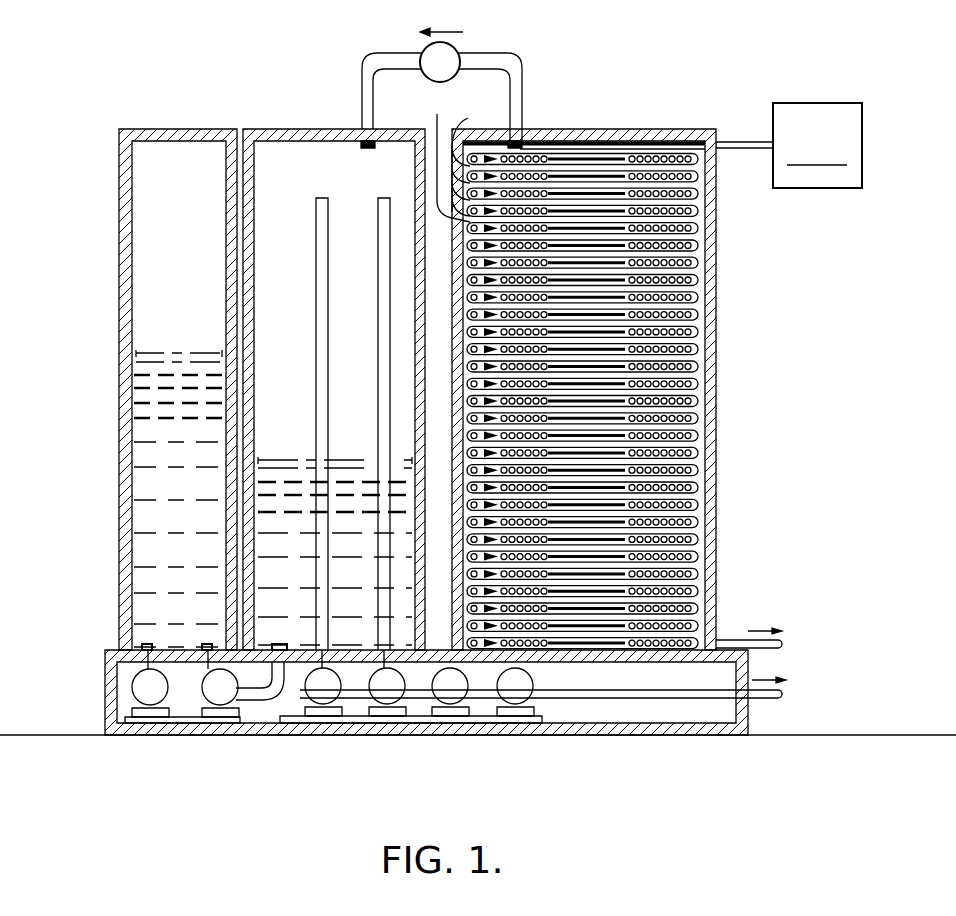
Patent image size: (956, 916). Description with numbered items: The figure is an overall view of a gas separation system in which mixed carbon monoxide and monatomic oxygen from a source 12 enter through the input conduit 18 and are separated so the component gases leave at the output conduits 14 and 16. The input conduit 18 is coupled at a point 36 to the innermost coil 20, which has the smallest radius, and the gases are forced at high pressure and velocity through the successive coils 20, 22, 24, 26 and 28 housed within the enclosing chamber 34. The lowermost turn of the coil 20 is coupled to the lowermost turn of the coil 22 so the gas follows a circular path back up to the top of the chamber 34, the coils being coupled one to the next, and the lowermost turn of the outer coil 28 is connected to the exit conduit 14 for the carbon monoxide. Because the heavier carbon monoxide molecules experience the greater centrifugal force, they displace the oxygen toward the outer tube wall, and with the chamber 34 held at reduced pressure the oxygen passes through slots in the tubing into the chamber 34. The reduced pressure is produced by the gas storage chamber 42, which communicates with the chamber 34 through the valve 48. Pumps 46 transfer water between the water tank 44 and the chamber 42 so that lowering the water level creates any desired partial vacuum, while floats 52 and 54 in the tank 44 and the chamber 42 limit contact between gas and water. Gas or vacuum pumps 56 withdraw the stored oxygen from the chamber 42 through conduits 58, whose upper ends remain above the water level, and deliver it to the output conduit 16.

The source of mixed gases 12 is at (823, 103).
The output conduit 14 is at (726, 643).
The output conduit 16 is at (755, 693).
The input conduit 18 is at (752, 142).
The innermost coil 20 is at (545, 160).
The coil of tubing 22 is at (525, 145).
The coil 24 is at (507, 158).
The coil 26 is at (462, 158).
The outer coil 28 is at (441, 157).
The enclosing chamber 34 is at (699, 274).
The coupling point 36 is at (532, 160).
The gas storage chamber 42 is at (268, 150).
The water tank 44 is at (148, 178).
The pumps 46 is at (220, 697).
The valve 48 is at (425, 50).
The float 52 is at (150, 353).
The float 54 is at (311, 458).
The gas or vacuum pumps 56 is at (515, 690).
The conduits 58 is at (384, 202).